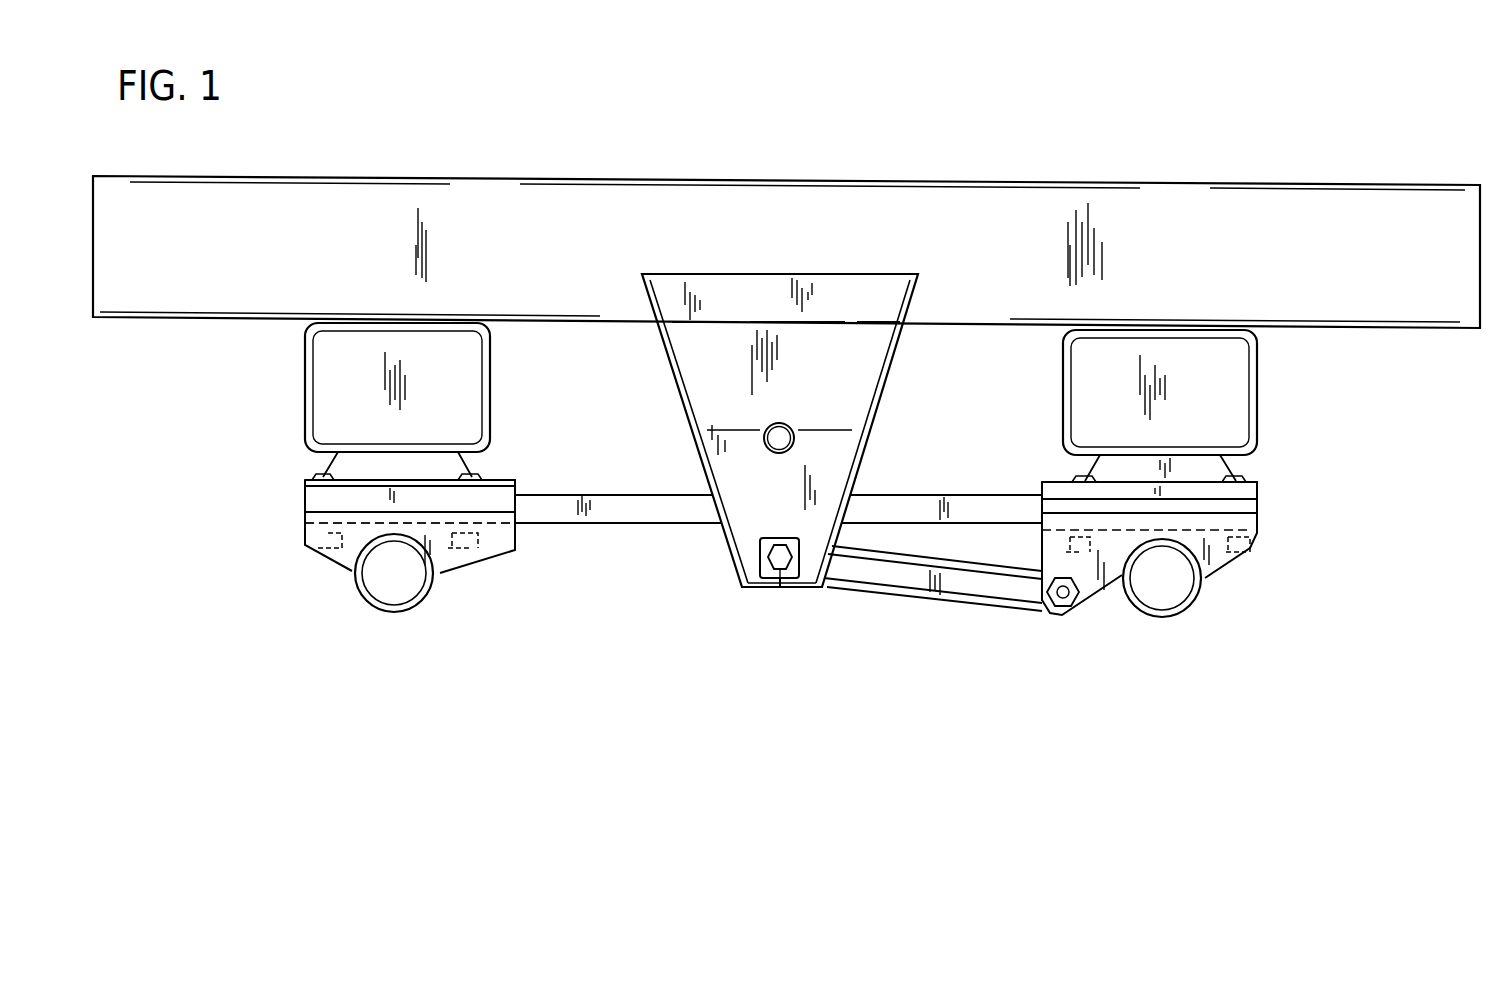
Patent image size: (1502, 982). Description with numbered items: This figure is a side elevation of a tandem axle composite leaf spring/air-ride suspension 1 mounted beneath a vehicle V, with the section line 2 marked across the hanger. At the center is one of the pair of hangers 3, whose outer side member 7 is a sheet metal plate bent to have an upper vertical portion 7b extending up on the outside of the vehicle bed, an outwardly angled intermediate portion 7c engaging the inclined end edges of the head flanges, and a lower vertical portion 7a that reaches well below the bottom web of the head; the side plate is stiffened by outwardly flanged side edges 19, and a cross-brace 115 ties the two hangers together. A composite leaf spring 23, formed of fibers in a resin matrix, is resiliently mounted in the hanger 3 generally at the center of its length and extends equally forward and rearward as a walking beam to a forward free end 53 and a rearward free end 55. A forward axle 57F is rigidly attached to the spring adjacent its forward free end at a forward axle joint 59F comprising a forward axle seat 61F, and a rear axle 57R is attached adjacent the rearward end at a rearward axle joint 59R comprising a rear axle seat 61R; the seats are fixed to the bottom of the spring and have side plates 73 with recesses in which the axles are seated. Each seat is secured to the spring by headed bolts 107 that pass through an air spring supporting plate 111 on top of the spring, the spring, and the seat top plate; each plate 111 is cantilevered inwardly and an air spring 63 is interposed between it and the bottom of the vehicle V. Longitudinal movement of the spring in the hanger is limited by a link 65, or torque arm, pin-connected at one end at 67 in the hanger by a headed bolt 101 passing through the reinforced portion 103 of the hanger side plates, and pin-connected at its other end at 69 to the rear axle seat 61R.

The tandem axle composite leaf spring/air-ride suspension 1 is at (680, 672).
The section line 2- 2 is at (780, 253).
The hanger 3 is at (843, 274).
The outer side member 7 is at (845, 411).
The lower vertical portion 7a is at (838, 476).
The upper vertical portion 7b is at (730, 298).
The outwardly angled intermediate portion 7c is at (708, 374).
The outwardly flanged side edges 19 is at (672, 340).
The composite leaf spring 23 is at (608, 526).
The forward free end 53 is at (312, 486).
The rearward free end 55 is at (1258, 500).
The forward axle 57F is at (395, 612).
The rear axle 57R is at (1165, 617).
The forward axle joint 59F is at (326, 572).
The rearward axle joint 59R is at (1240, 590).
The forward axle seat 61F is at (345, 571).
The rear axle seat 61R is at (1255, 548).
The air spring 63 is at (303, 396).
The link 65 is at (962, 602).
The pin connection 67 is at (771, 557).
The pin connection 69 is at (1050, 612).
The side plate 73 is at (306, 522).
The headed bolt 101 is at (782, 586).
The reinforcement 103 is at (748, 574).
The headed bolt 107 is at (1245, 480).
The air spring supporting plate 111 is at (1042, 481).
The cross-brace 115 is at (790, 424).
The vehicle V is at (1134, 164).